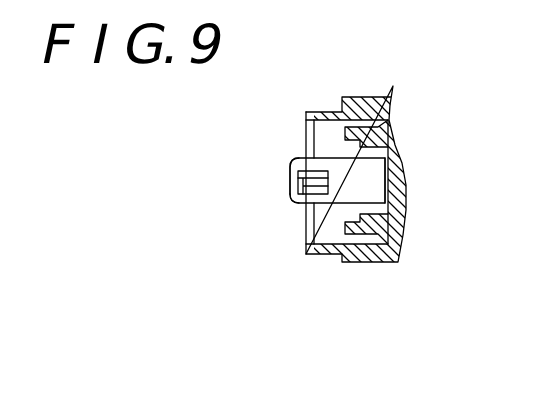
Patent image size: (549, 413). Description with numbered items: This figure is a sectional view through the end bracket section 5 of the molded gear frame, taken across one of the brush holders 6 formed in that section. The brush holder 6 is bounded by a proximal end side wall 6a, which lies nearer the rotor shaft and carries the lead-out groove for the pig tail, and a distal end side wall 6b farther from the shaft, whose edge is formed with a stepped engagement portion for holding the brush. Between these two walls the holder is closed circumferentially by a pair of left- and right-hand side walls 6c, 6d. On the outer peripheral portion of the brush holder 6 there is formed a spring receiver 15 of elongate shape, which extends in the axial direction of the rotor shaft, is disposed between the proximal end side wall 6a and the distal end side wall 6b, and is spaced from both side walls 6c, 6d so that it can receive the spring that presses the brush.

The end bracket section 5 is at (374, 80).
The brush holder 6 is at (291, 157).
The proximal end side wall 6a is at (295, 193).
The distal end side wall 6b is at (338, 187).
The left-hand side wall 6c is at (320, 158).
The right-hand side wall 6d is at (299, 203).
The spring receiver 15 is at (296, 180).